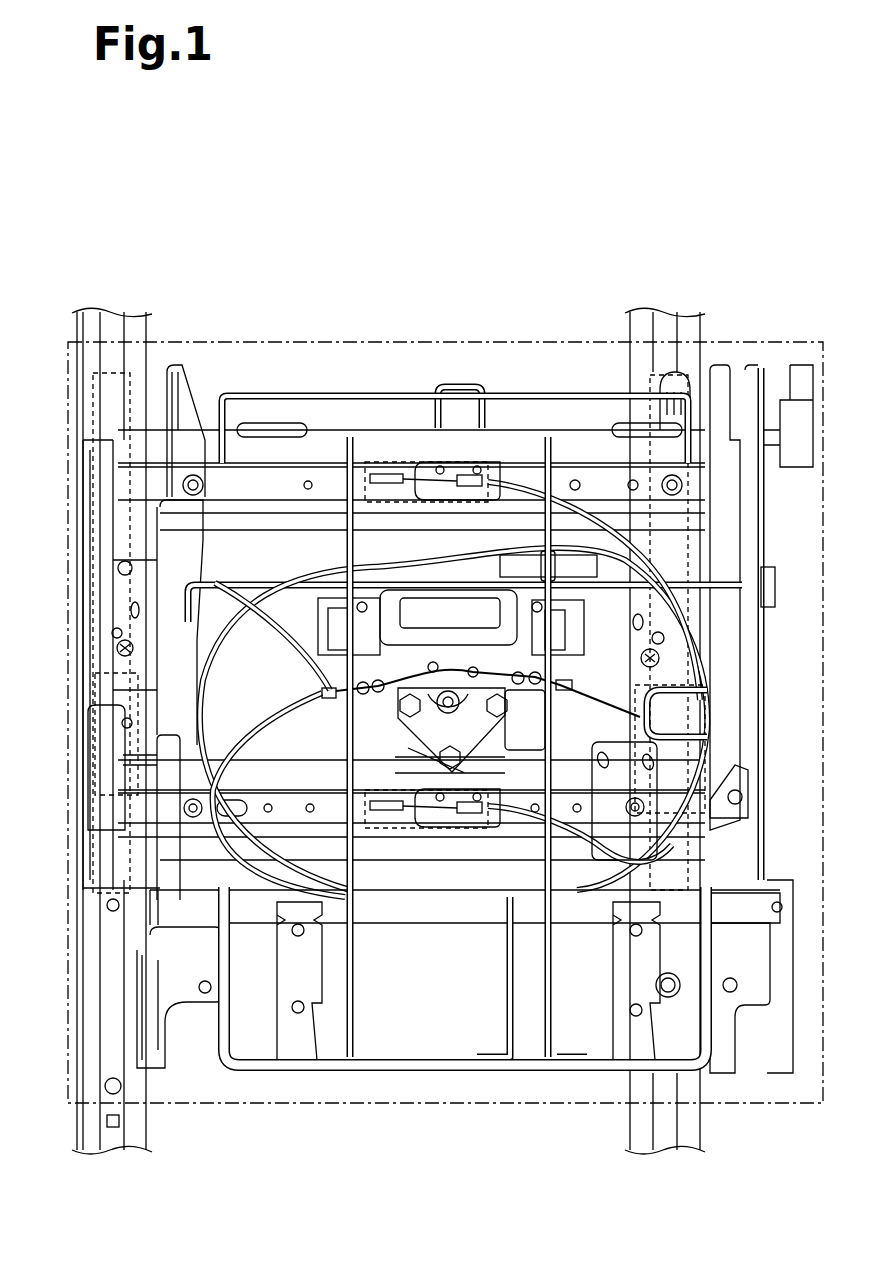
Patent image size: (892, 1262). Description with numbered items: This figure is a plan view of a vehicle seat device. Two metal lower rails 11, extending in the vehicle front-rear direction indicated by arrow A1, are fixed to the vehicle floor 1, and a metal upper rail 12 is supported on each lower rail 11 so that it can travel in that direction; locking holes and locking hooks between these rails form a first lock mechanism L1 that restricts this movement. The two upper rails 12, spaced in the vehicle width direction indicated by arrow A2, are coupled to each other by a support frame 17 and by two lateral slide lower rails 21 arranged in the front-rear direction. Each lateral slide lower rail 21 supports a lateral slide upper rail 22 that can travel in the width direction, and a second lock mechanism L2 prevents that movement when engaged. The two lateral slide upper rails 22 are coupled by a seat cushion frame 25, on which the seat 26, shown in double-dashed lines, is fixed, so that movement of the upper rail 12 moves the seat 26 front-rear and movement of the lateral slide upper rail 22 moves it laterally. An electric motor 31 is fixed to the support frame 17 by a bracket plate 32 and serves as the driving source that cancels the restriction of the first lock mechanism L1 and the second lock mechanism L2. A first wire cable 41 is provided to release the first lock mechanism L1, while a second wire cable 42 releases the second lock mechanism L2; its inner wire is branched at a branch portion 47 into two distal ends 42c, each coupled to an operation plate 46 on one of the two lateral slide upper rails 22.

The vehicle floor 1 is at (200, 322).
The lower rail 11 is at (134, 320).
The upper rail 12 is at (132, 382).
The support frame 17 is at (158, 559).
The lateral slide lower rail 21 is at (300, 510).
The lateral slide upper rail 22 is at (331, 480).
The seat cushion frame 25 is at (393, 1072).
The seat 26 is at (466, 1106).
The electric motor 31 is at (544, 752).
The bracket plate 32 is at (571, 672).
The first wire cable 41 is at (589, 752).
The second wire cable 42 is at (302, 705).
The distal end 42c is at (392, 488).
The operation plate 46 is at (381, 475).
The branch portion 47 is at (511, 562).
The first lock mechanism L1 is at (137, 670).
The second lock mechanism L2 is at (430, 456).
The vehicle front-rear direction A1 is at (255, 176).
The vehicle width direction A2 is at (507, 303).